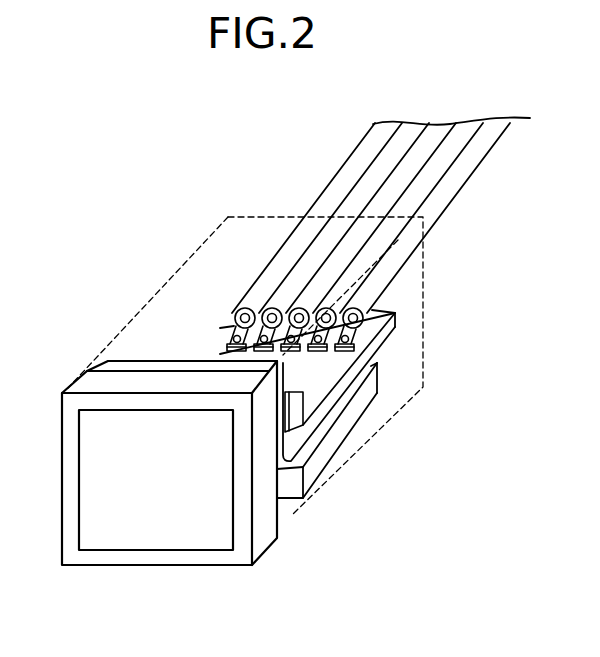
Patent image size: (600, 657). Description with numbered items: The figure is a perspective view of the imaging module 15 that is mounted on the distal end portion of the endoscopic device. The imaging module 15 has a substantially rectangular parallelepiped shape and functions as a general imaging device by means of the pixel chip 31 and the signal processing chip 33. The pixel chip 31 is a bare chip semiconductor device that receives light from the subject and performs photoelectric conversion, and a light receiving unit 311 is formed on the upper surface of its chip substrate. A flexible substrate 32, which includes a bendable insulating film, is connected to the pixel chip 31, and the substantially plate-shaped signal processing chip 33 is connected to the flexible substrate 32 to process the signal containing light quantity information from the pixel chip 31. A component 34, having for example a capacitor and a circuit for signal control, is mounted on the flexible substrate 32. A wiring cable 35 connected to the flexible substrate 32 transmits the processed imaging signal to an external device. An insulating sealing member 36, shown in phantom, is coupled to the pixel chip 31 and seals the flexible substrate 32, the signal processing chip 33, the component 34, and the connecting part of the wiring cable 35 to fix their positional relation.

The imaging module 15 is at (88, 214).
The pixel chip 31 is at (82, 380).
The light receiving unit 311 is at (160, 540).
The flexible substrate 32 is at (140, 361).
The signal processing chip 33 is at (380, 366).
The component 34 is at (292, 413).
The wiring cable 35 is at (473, 155).
The insulating sealing member 36 is at (264, 215).